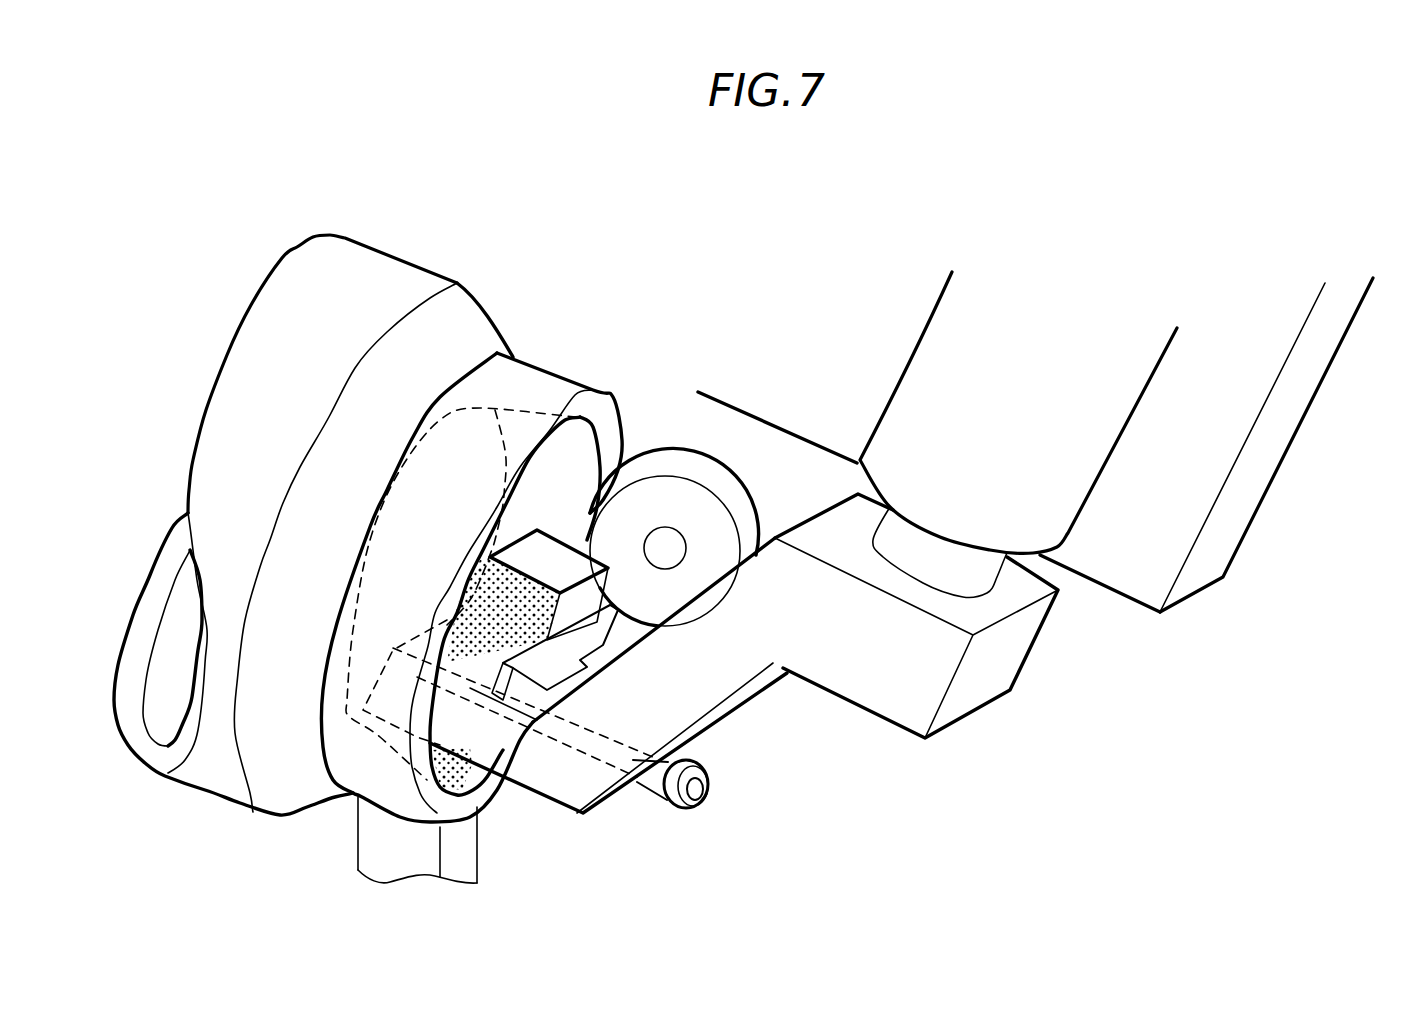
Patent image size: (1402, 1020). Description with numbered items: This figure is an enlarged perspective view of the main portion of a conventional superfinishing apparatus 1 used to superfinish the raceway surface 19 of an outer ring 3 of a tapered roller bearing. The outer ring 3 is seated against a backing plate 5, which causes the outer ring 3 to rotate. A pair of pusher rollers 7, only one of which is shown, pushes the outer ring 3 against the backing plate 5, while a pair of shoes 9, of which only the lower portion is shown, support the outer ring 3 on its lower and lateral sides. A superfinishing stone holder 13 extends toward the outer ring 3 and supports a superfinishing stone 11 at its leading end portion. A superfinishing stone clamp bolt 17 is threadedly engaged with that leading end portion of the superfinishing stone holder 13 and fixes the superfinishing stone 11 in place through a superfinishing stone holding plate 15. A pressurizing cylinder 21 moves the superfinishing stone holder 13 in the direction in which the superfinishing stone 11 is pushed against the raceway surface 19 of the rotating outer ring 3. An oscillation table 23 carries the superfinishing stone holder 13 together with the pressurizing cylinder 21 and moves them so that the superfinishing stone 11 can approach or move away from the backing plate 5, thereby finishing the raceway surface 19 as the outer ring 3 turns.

The superfinishing apparatus 1 is at (804, 285).
The outer ring 3 is at (551, 364).
The backing plate 5 is at (383, 287).
The pusher roller 7 is at (696, 472).
The shoe 9 is at (403, 867).
The superfinishing stone 11 is at (578, 540).
The superfinishing stone holder 13 is at (752, 703).
The superfinishing stone holding plate 15 is at (520, 677).
The superfinishing stone clamp bolt 17 is at (710, 790).
The raceway surface 19 is at (560, 467).
The pressurizing cylinder 21 is at (1073, 497).
The oscillation table 23 is at (1253, 492).